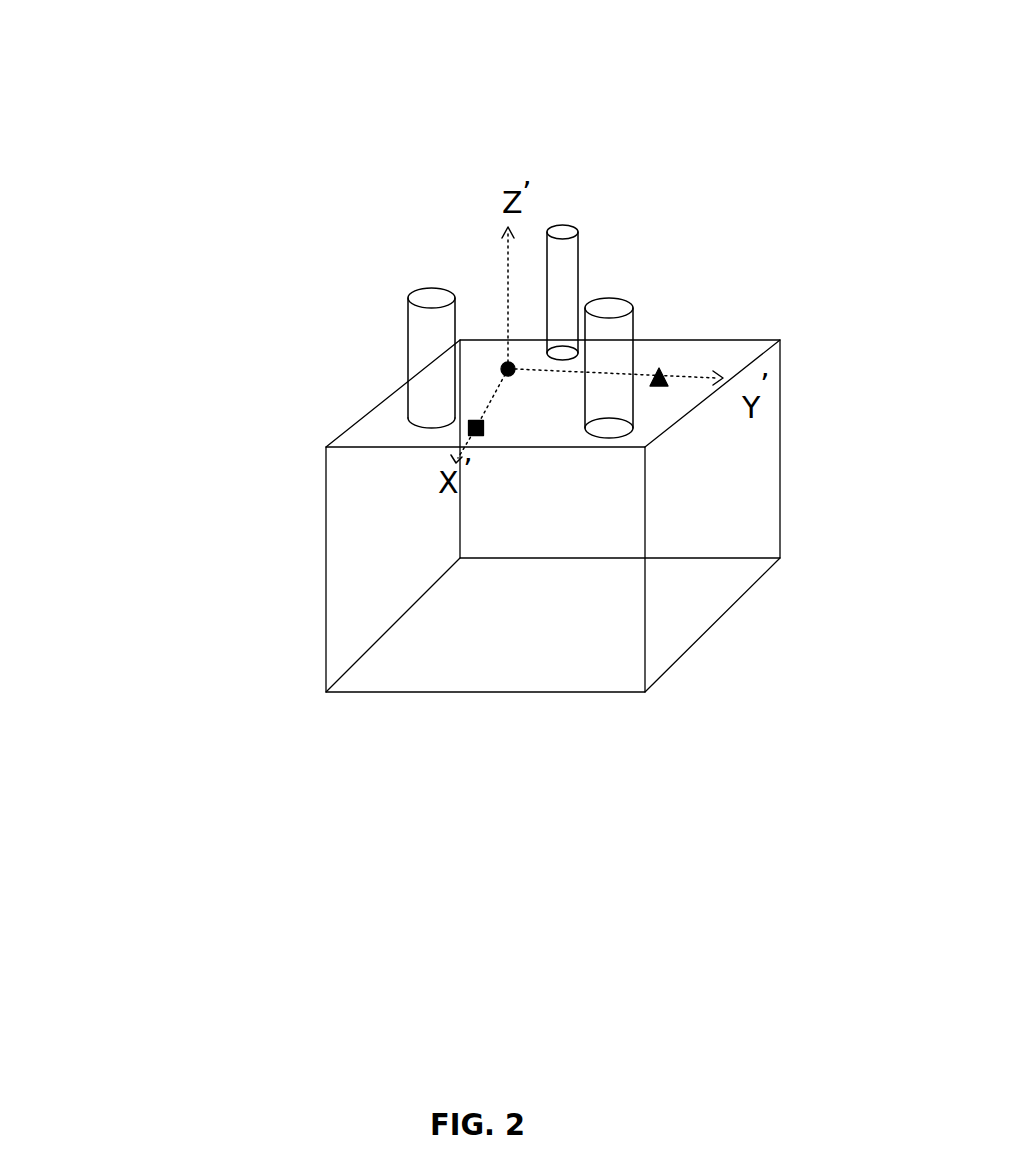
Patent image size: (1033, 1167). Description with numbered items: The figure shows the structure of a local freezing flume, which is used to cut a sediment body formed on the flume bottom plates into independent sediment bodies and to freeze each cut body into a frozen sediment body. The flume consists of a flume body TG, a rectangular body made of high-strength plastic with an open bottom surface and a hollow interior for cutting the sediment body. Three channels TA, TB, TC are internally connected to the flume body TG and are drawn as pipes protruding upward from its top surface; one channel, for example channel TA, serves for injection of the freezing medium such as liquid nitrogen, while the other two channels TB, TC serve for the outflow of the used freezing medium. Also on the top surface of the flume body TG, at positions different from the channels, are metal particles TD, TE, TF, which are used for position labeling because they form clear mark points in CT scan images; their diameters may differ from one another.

The channel TA is at (562, 232).
The channel TB is at (420, 322).
The channel TC is at (613, 308).
The metal particle TD is at (508, 369).
The metal particle TE is at (659, 370).
The metal particle TF is at (470, 430).
The flume body TG is at (395, 557).